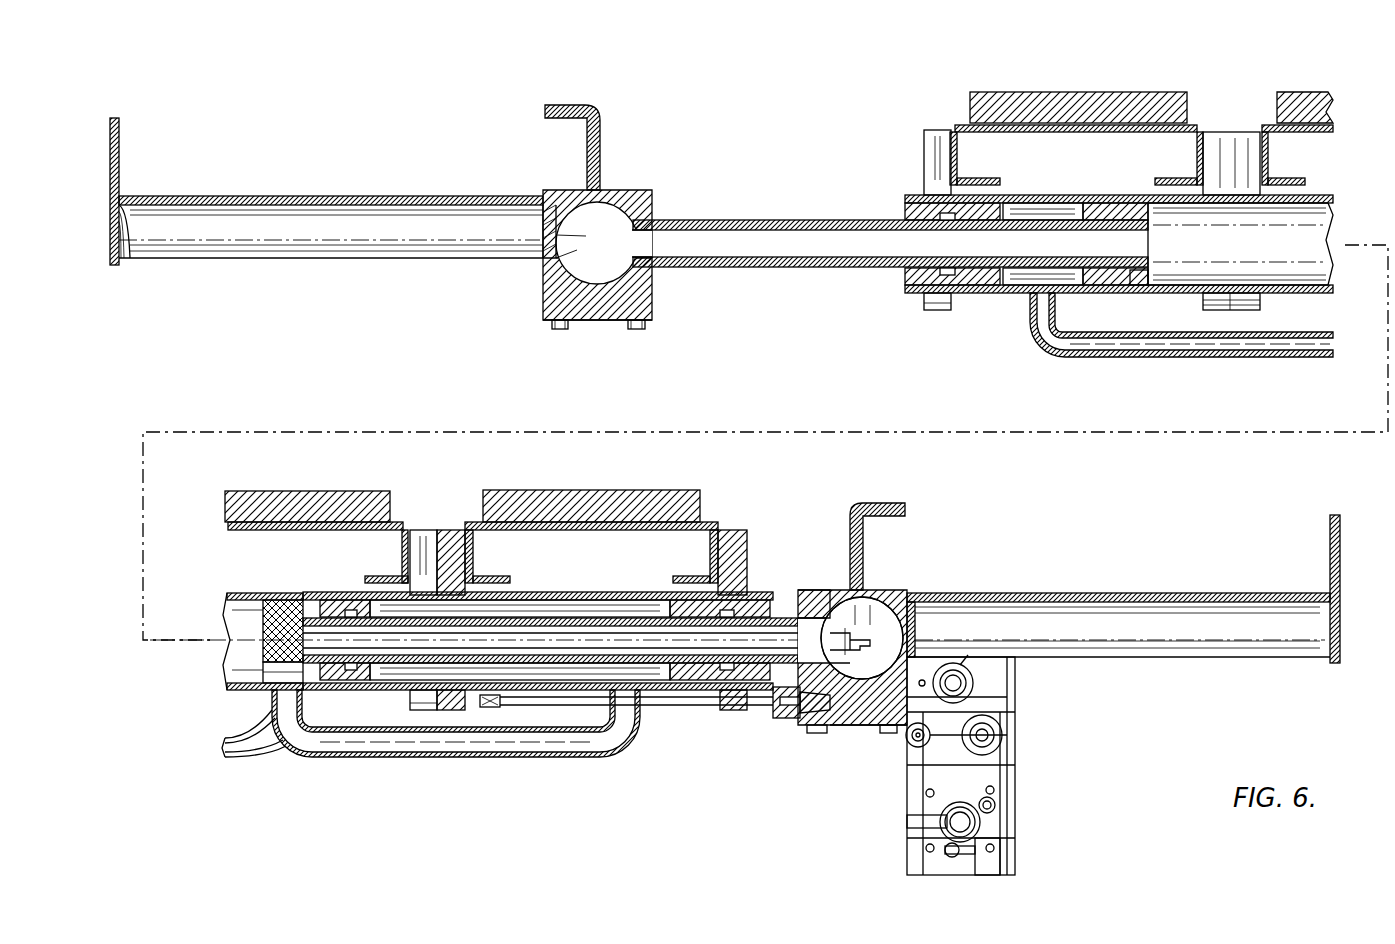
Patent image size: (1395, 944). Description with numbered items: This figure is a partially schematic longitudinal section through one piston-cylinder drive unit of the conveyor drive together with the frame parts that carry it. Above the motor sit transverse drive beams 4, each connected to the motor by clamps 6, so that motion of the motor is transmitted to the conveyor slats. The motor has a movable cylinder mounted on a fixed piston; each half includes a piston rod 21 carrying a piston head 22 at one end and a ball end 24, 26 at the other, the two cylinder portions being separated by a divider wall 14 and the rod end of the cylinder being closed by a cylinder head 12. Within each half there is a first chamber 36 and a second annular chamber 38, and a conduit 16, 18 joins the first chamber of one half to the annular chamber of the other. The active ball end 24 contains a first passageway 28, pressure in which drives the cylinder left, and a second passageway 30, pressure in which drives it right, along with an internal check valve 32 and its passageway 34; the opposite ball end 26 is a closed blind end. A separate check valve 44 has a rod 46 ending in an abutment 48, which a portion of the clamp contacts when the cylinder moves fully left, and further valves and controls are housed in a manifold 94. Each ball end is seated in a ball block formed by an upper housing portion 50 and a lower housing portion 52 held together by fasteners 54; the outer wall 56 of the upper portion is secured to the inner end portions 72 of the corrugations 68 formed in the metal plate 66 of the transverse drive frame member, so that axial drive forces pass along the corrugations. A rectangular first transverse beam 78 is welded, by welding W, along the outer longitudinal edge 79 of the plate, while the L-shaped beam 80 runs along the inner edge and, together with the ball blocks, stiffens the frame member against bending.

The transverse drive beam 4 is at (955, 127).
The clamp 6 is at (925, 162).
The cylinder head 12 is at (905, 288).
The divider wall 14 is at (283, 604).
The conduit 16 is at (510, 758).
The conduit 18 is at (1240, 352).
The piston rod 21 is at (795, 268).
The piston head 22 is at (1138, 292).
The ball end 24 is at (900, 602).
The ball end 26 is at (622, 193).
The first passageway 28 is at (832, 595).
The second passageway 30 is at (850, 726).
The internal check valve 32 is at (915, 625).
The passageway 34 is at (868, 600).
The first chamber 36 is at (1270, 263).
The second annular chamber 38 is at (1045, 205).
The check valve 44 is at (815, 719).
The wire cable or rod 46 is at (660, 706).
The abutment 48 is at (490, 708).
The upper housing portion 50 is at (653, 196).
The lower housing portion 52 is at (652, 292).
The fasteners 54 is at (560, 330).
The outer wall 56 is at (540, 252).
The metal plate 66 is at (322, 196).
The corrugations 68 is at (283, 240).
The inner end portions 72 is at (558, 192).
The first transverse beam 78 is at (120, 150).
The outer longitudinal edge 79 is at (112, 232).
The transverse beam 80 is at (598, 110).
The manifold 94 is at (1017, 708).
The welding W is at (128, 262).